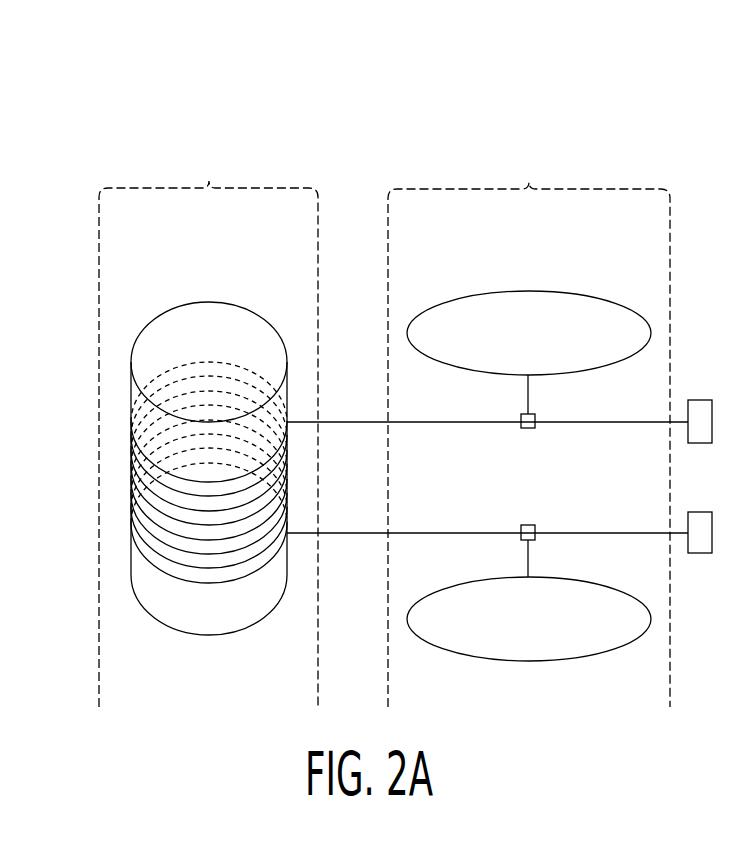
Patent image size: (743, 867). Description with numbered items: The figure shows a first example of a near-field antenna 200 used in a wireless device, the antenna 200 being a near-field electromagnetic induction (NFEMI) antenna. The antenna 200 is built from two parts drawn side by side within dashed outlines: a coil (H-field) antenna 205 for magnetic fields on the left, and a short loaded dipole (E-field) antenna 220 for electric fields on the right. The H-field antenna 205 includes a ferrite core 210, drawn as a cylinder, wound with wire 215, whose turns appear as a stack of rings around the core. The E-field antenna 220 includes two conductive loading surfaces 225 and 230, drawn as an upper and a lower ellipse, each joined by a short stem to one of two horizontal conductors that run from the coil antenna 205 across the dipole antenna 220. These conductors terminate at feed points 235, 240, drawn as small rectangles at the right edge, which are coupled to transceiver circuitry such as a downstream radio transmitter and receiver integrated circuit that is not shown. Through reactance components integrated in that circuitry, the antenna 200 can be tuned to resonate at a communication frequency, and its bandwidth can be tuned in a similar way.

The near-field antenna 200 is at (172, 123).
The coil (H-field) antenna 205 is at (208, 426).
The ferrite core 210 is at (239, 302).
The wire 215 is at (180, 633).
The short loaded dipole (E-field) antenna 220 is at (529, 426).
The conductive loading surface 225 is at (573, 293).
The conductive loading surface 230 is at (572, 660).
The feed point 235 is at (698, 399).
The feed point 240 is at (700, 555).